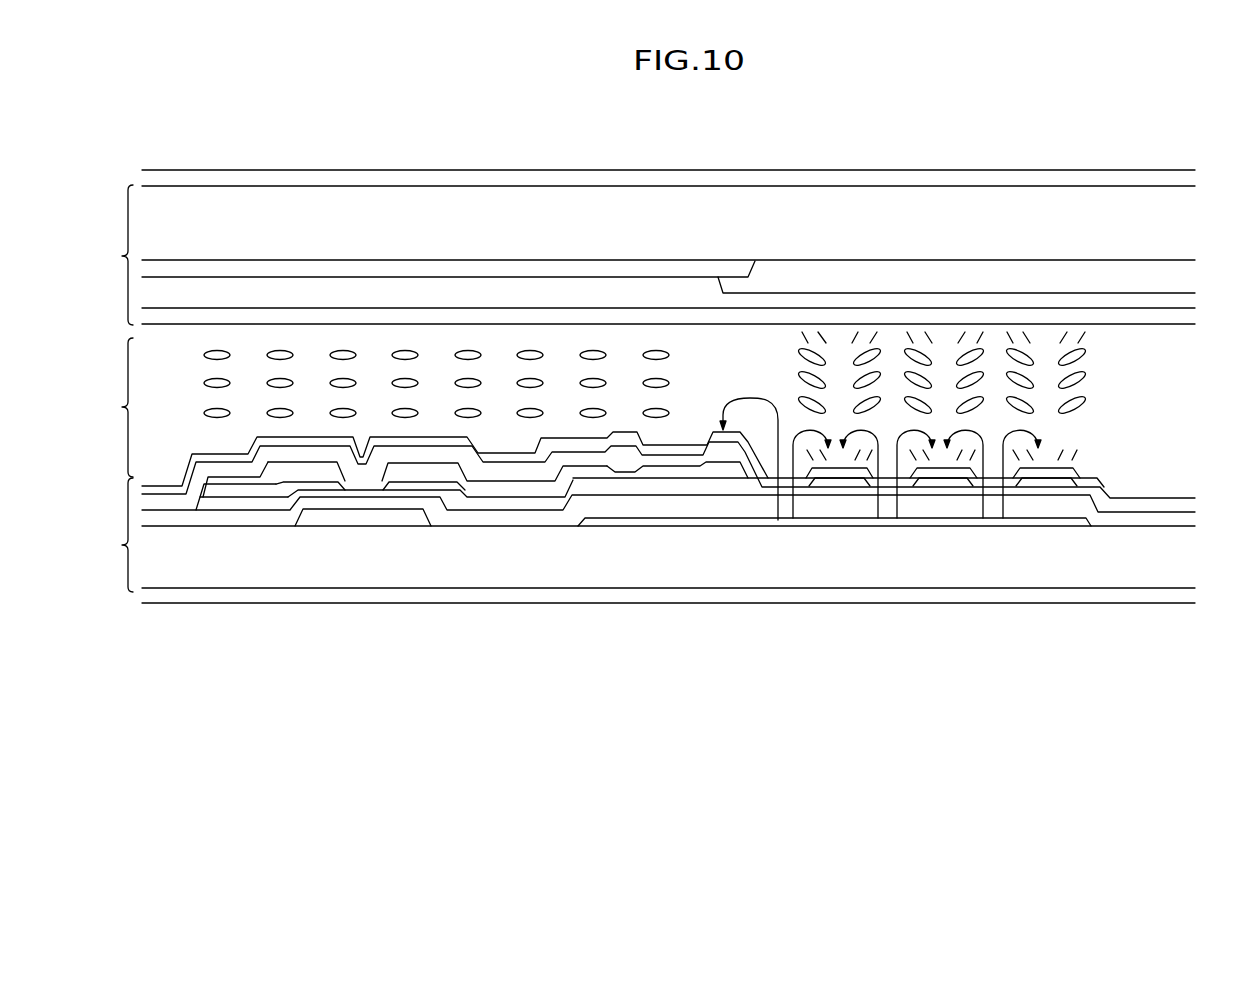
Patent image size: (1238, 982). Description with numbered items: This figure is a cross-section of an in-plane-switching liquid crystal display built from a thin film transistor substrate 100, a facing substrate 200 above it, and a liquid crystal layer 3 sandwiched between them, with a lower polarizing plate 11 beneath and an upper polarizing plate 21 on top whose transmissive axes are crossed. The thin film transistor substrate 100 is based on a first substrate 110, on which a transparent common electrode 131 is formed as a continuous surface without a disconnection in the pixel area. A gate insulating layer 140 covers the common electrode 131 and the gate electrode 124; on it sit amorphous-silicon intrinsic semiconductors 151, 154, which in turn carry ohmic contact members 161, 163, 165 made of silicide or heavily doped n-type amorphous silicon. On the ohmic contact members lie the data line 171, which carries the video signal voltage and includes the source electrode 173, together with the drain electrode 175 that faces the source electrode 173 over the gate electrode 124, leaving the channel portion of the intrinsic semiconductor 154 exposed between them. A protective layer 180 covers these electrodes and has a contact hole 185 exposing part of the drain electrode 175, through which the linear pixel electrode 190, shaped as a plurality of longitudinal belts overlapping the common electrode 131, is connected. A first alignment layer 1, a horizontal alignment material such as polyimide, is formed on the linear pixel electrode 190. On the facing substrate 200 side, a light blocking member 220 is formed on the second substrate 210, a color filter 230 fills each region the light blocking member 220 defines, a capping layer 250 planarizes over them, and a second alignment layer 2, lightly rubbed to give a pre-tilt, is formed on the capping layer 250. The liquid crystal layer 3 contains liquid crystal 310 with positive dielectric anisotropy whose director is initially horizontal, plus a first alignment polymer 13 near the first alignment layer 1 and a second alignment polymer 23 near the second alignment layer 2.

The first alignment layer 1 is at (1060, 480).
The second alignment layer 2 is at (1147, 320).
The liquid crystal layer 3 is at (120, 407).
The lower polarizing plate 11 is at (1127, 598).
The first alignment polymer 13 is at (918, 492).
The upper polarizing plate 21 is at (263, 182).
The second alignment polymer 23 is at (916, 340).
The thin film transistor substrate 100 is at (105, 535).
The first substrate 110 is at (982, 575).
The gate electrode 124 is at (366, 515).
The common electrode 131 is at (752, 522).
The gate insulating layer 140 is at (505, 512).
The intrinsic semiconductor 151 is at (212, 500).
The intrinsic semiconductor 154 is at (338, 500).
The ohmic contact member 161 is at (222, 515).
The ohmic contact member 163 is at (320, 500).
The ohmic contact member 165 is at (405, 492).
The data line 171 is at (207, 486).
The source electrode 173 is at (306, 484).
The drain electrode 175 is at (432, 481).
The protective layer 180 is at (815, 492).
The contact hole 185 is at (650, 442).
The linear pixel electrode 190 is at (617, 443).
The facing substrate 200 is at (105, 255).
The second substrate 210 is at (383, 222).
The light blocking member 220 is at (690, 275).
The color filter 230 is at (1053, 272).
The capping layer 250 is at (527, 290).
The liquid crystal 310 is at (1090, 374).